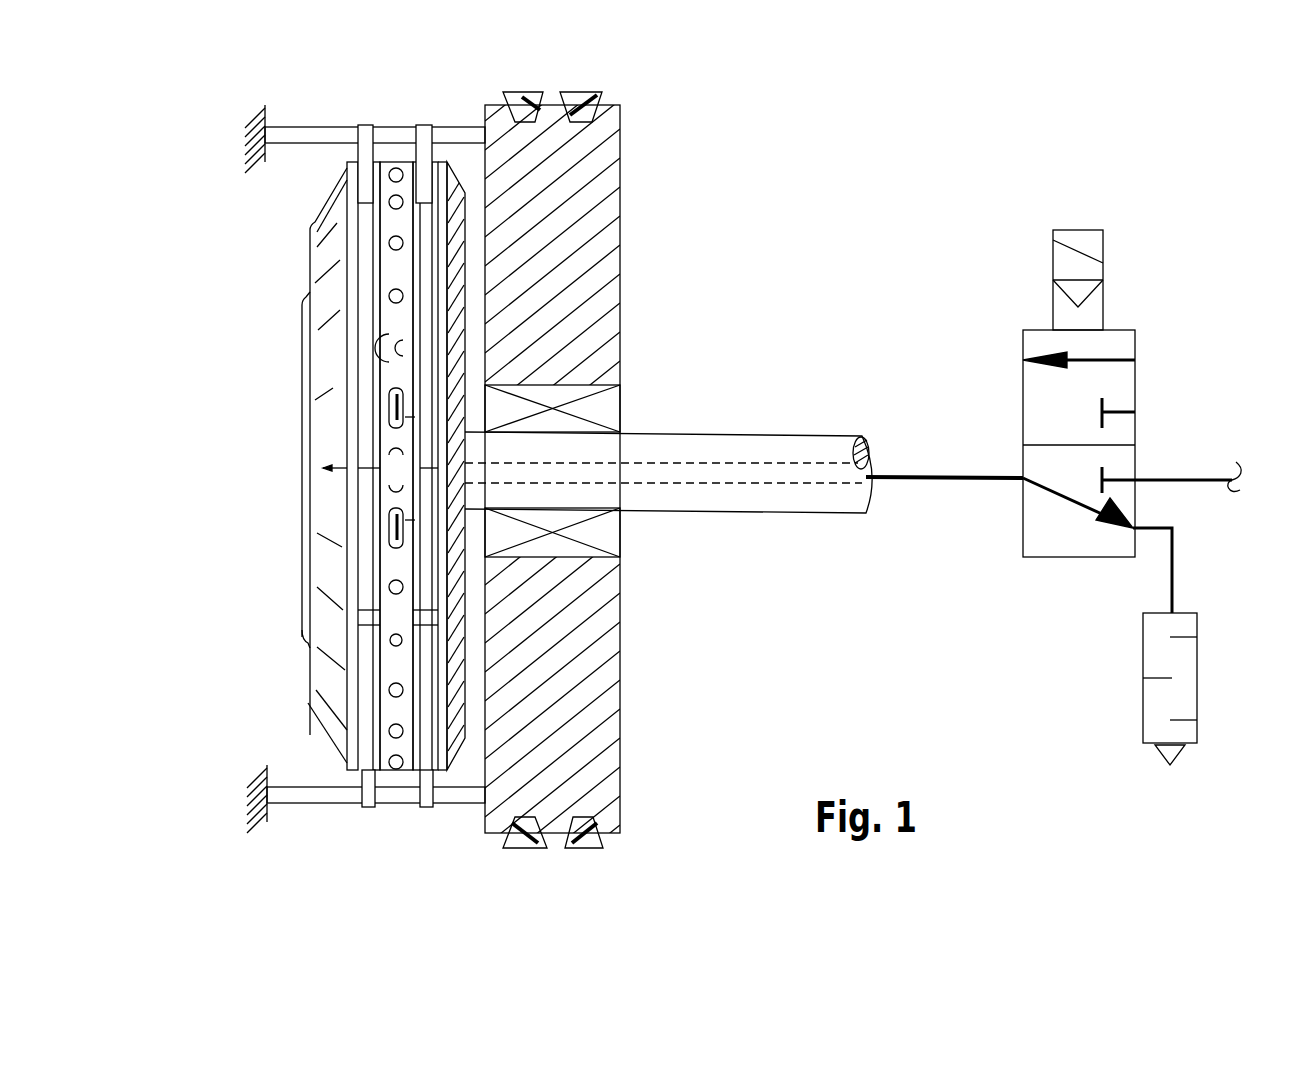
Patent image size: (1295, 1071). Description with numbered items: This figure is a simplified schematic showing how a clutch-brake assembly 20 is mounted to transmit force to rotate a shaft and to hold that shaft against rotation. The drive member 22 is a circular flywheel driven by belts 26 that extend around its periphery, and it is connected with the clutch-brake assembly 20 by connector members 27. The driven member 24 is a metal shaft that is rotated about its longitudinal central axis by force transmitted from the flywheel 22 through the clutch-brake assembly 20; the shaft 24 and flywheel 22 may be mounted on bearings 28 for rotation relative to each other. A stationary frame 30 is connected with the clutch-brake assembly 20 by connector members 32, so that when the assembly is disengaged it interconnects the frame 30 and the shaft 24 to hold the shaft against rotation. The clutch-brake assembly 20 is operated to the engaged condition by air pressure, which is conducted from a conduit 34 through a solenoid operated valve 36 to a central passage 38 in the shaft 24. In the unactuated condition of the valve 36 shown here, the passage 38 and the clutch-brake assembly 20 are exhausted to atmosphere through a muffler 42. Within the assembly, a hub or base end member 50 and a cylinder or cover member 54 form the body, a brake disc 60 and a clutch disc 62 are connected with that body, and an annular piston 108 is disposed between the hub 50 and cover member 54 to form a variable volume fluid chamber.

The clutch-brake assembly 20 is at (277, 472).
The drive member 22 is at (567, 245).
The driven member 24 is at (786, 500).
The belts 26 is at (572, 97).
The connector members 27 is at (450, 130).
The bearings 28 is at (557, 380).
The stationary frame 30 is at (248, 137).
The connector members 32 is at (300, 140).
The conduit 34 is at (1195, 478).
The solenoid operated valve 36 is at (1205, 283).
The central passage 38 is at (738, 475).
The muffler 42 is at (1185, 665).
The hub or base end member 50 is at (450, 708).
The cylinder or cover member 54 is at (330, 623).
The brake disc 60 is at (366, 253).
The clutch disc 62 is at (420, 315).
The annular piston 108 is at (397, 772).